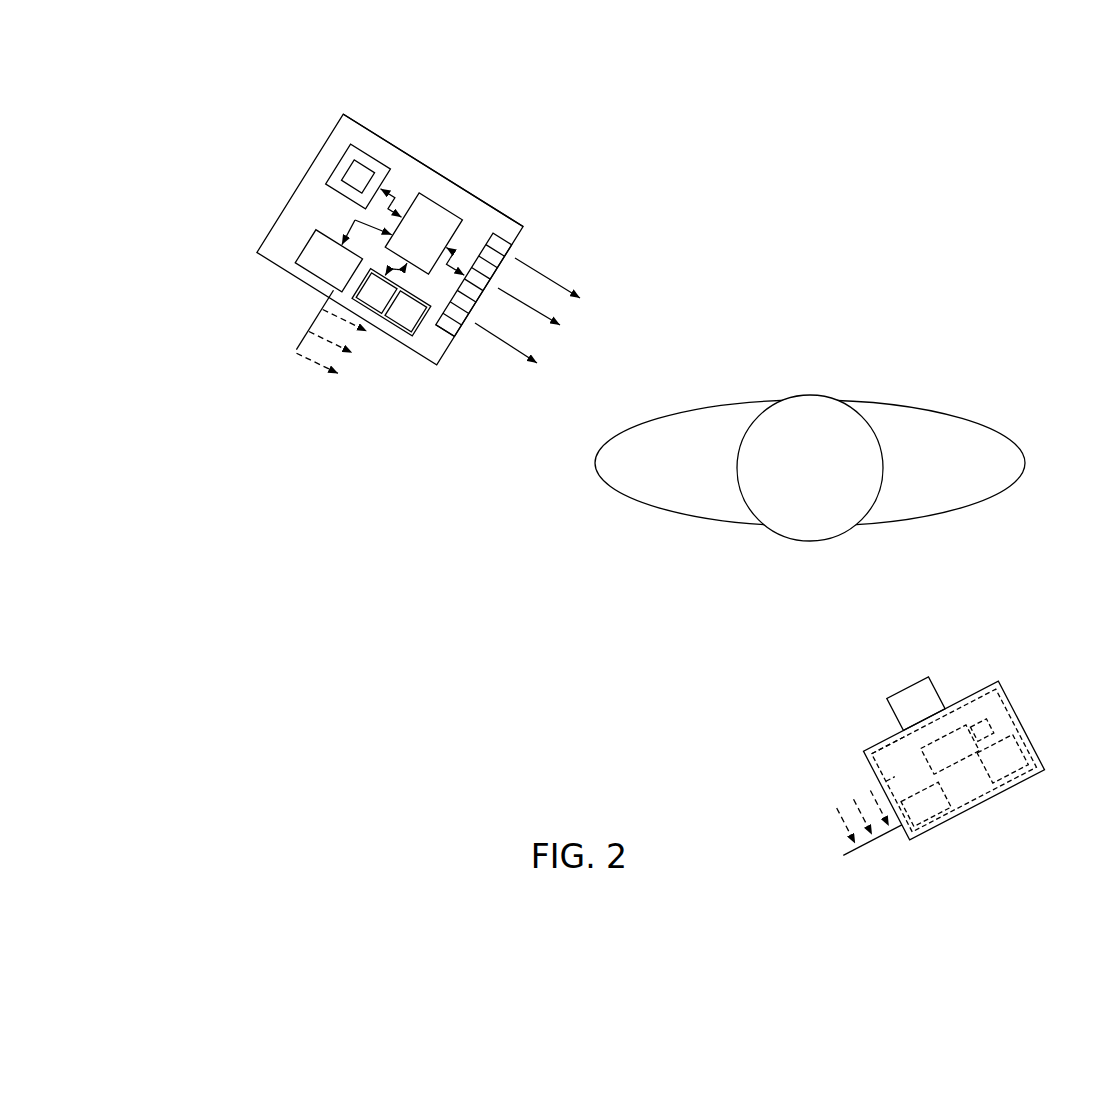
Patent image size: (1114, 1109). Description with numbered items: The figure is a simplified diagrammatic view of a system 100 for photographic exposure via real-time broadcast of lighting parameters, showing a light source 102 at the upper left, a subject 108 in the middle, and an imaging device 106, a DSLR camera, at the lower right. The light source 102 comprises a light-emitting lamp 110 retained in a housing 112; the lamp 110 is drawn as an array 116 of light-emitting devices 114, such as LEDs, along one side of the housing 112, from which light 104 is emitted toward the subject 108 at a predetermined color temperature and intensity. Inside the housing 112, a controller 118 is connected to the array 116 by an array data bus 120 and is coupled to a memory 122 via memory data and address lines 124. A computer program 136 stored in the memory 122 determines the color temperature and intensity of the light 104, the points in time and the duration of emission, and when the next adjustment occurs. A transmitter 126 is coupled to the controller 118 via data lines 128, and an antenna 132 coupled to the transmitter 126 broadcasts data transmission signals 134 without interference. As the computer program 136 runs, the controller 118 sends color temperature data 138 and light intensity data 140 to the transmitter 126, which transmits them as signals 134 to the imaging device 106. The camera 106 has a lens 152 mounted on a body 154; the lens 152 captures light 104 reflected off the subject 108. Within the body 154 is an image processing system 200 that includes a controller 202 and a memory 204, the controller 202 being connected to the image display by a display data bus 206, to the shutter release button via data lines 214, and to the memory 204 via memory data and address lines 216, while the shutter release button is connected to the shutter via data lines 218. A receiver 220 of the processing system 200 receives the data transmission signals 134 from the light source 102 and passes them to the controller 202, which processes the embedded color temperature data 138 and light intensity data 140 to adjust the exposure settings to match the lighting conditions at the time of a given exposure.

The system for photographic exposure via real-time broadcast of lighting parameters 100 is at (600, 670).
The light source 102 is at (262, 282).
The light 104 is at (557, 272).
The imaging device 106 is at (1000, 650).
The subject 108 is at (692, 408).
The light-emitting lamp 110 is at (535, 243).
The housing 112 is at (423, 162).
The light-emitting device 114 is at (460, 288).
The array 116 is at (440, 335).
The controller 118 is at (433, 220).
The array data bus 120 is at (482, 242).
The memory 122 is at (342, 157).
The memory data and address lines 124 is at (396, 196).
The transmitter 126 is at (308, 252).
The data lines 128 is at (355, 220).
The antenna 132 is at (300, 342).
The data transmission signals 134 is at (312, 378).
The computer program 136 is at (360, 170).
The color temperature data 138 is at (378, 300).
The light intensity data 140 is at (408, 320).
The lens 152 is at (925, 690).
The body 154 is at (985, 808).
The image processing system 200 is at (1023, 730).
The controller 202 is at (960, 740).
The memory 204 is at (1010, 766).
The display data bus 206 is at (905, 742).
The data lines 214 is at (982, 737).
The memory data and address lines 216 is at (930, 800).
The data lines 218 is at (865, 838).
The receiver 220 is at (923, 762).